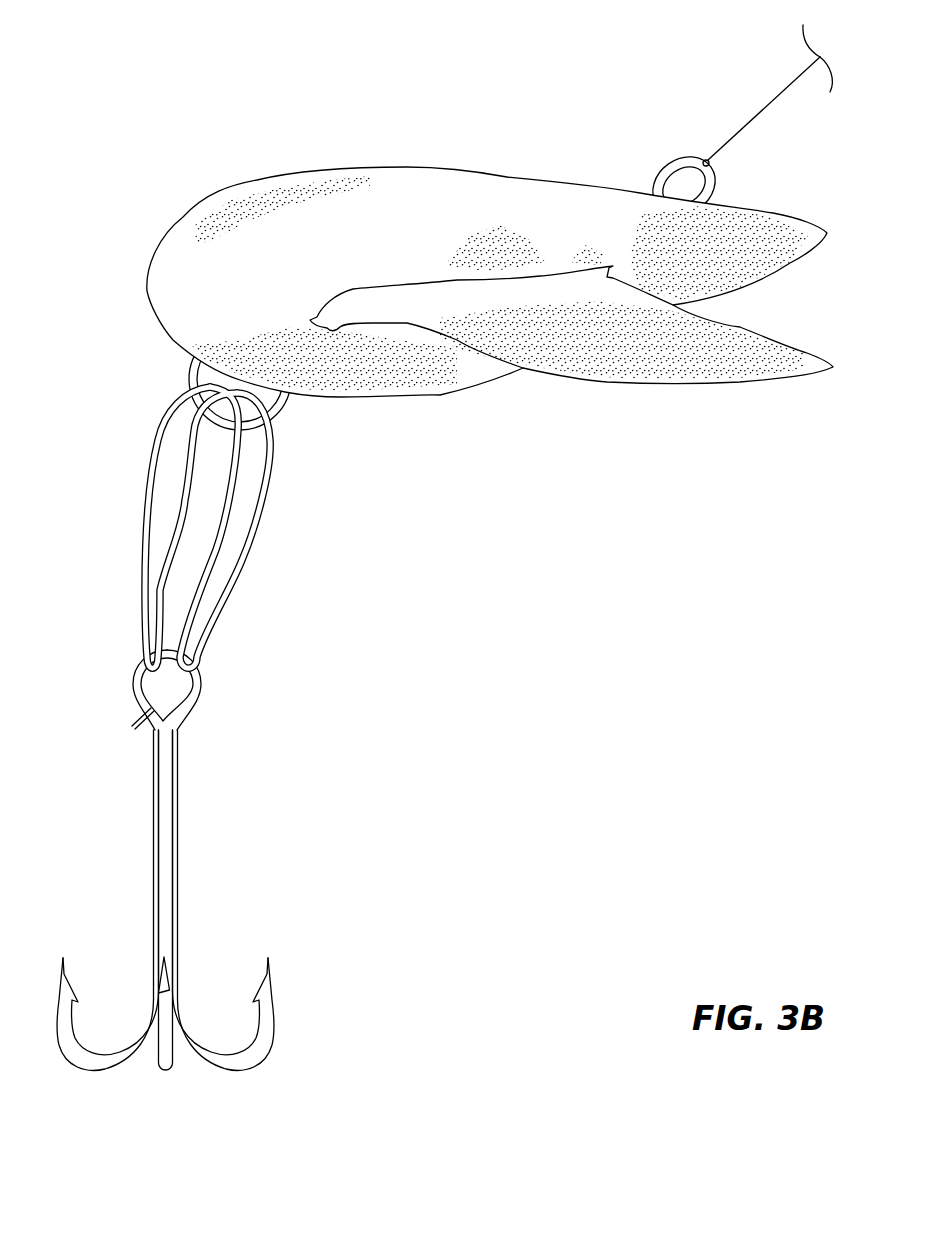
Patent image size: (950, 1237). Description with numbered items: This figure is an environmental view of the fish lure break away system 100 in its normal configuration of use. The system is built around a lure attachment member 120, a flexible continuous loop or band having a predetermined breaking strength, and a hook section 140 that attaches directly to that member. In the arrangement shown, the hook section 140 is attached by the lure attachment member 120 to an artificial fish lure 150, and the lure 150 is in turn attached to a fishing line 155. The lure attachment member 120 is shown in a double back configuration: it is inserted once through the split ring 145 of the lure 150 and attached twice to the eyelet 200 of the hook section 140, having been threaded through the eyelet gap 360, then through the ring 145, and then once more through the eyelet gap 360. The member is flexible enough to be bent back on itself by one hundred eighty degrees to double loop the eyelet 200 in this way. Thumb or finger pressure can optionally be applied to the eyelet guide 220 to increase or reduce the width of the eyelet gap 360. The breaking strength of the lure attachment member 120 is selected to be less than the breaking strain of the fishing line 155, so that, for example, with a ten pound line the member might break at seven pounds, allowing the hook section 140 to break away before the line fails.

The fish lure break away system 100 is at (441, 546).
The lure attachment member 120 is at (259, 527).
The hook section 140 is at (259, 837).
The split ring 145 is at (285, 415).
The artificial fish lure 150 is at (424, 166).
The fishing line 155 is at (760, 108).
The eyelet 200 is at (200, 690).
The eyelet guide 220 is at (130, 722).
The eyelet gap 360 is at (146, 728).